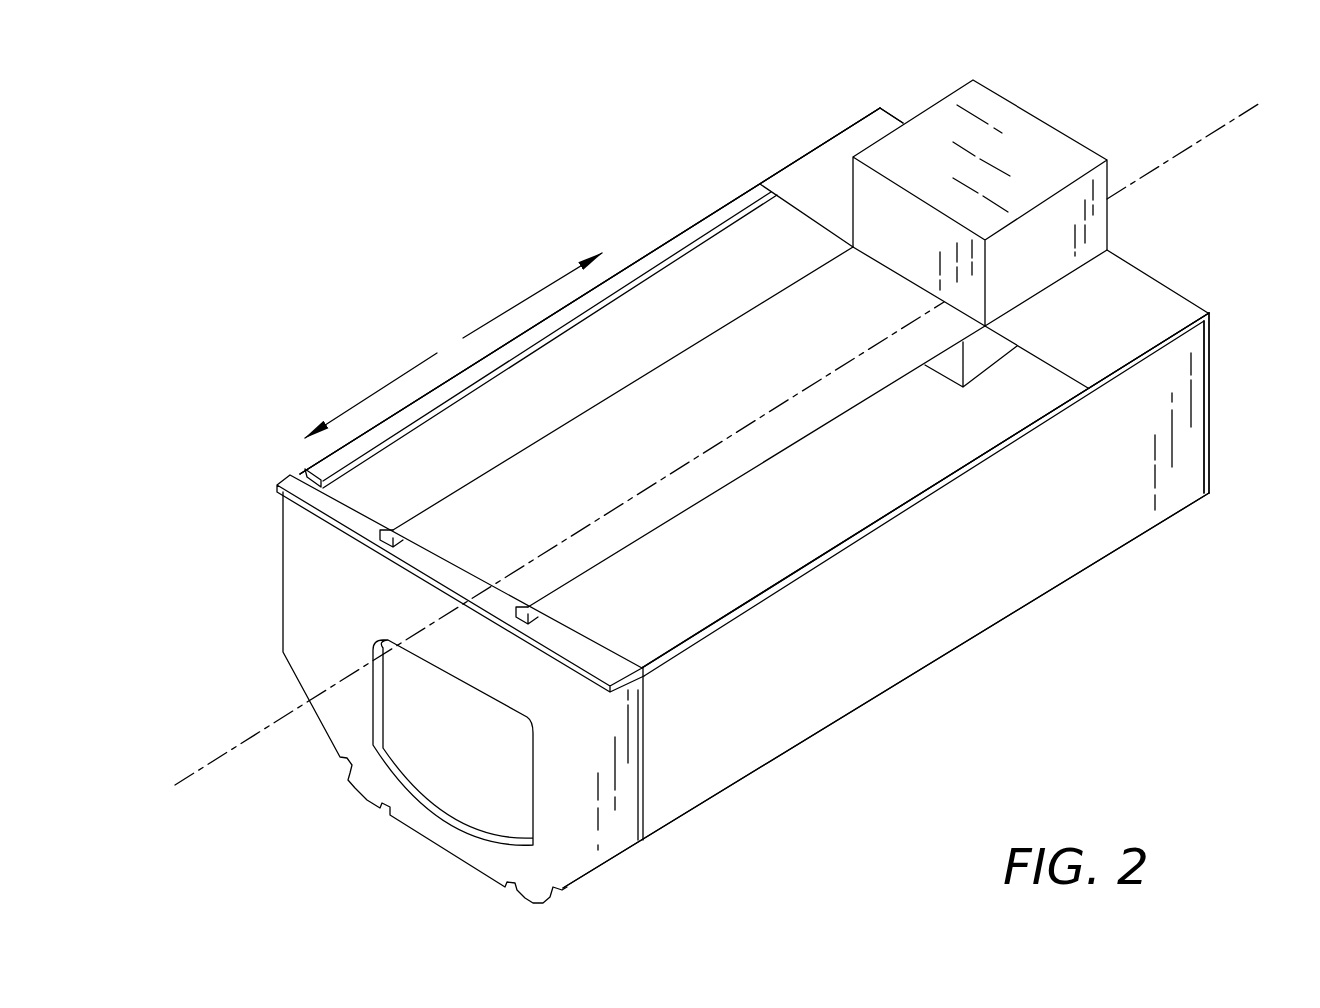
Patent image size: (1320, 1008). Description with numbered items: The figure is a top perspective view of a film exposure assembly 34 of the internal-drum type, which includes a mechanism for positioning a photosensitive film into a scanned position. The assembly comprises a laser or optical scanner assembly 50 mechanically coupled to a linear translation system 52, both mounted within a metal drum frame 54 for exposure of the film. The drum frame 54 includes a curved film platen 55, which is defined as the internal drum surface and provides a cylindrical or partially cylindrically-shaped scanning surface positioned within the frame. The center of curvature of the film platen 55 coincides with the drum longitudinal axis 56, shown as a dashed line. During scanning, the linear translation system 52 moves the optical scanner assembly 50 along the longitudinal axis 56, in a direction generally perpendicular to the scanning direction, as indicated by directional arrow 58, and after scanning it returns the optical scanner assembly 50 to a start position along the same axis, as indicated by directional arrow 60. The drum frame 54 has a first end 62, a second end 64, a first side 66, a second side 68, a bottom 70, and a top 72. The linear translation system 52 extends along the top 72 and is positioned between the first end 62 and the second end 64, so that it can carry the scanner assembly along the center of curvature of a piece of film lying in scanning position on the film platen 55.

The film exposure assembly 34 is at (587, 187).
The optical scanner assembly 50 is at (993, 347).
The linear translation system 52 is at (1050, 122).
The drum frame 54 is at (1152, 532).
The curved film platen 55 is at (747, 522).
The drum longitudinal axis 56 is at (255, 730).
The directional arrow 58 is at (391, 384).
The directional arrow 60 is at (497, 305).
The first end 62 is at (307, 603).
The second end 64 is at (1209, 403).
The first side 66 is at (708, 213).
The second side 68 is at (988, 610).
The bottom 70 is at (433, 843).
The top 72 is at (813, 175).